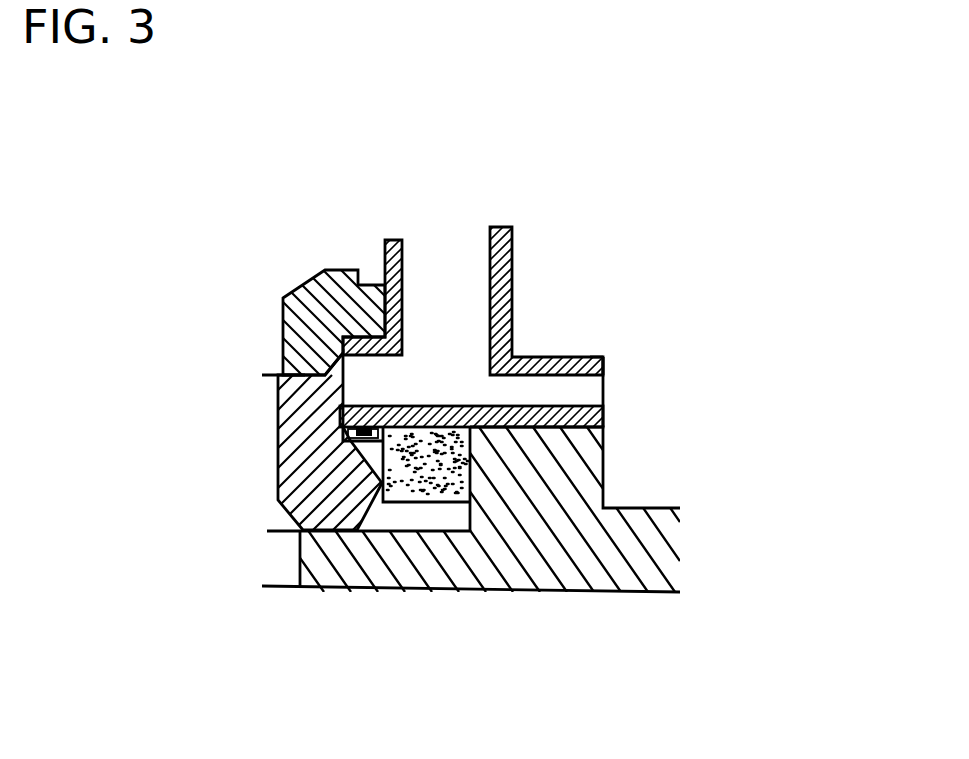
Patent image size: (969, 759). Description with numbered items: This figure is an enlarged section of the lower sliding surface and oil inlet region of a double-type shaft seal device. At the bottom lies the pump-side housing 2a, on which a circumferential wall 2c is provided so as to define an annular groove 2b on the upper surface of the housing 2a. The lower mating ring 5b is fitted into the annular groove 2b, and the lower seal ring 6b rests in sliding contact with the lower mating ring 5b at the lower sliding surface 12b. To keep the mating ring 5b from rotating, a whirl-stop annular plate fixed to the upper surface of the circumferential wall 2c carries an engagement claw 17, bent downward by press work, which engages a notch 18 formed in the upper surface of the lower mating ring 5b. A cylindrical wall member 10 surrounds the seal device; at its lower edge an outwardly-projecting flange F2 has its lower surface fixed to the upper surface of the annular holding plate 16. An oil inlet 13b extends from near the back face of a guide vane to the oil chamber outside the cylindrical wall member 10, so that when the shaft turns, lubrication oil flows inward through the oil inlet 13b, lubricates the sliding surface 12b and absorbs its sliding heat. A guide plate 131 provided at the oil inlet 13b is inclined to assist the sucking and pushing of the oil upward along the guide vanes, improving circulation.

The pump-side housing 2a is at (471, 593).
The annular groove 2b is at (378, 638).
The circumferential wall 2c is at (617, 479).
The lower mating ring 5b is at (250, 501).
The lower seal ring 6b is at (263, 299).
The cylindrical wall member 10 is at (593, 274).
The lower sliding surface 12b is at (187, 412).
The oil inlet 13b is at (714, 380).
The guide plate 131 is at (603, 358).
The annular holding plate 16 is at (471, 285).
The engagement claw 17 is at (224, 492).
The notch 18 is at (370, 587).
The outwardly-projecting flange F2 is at (610, 293).